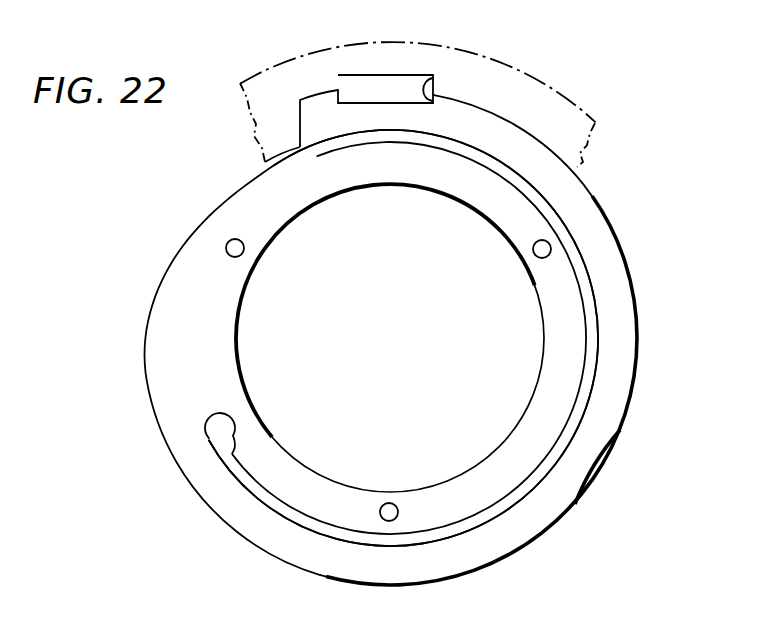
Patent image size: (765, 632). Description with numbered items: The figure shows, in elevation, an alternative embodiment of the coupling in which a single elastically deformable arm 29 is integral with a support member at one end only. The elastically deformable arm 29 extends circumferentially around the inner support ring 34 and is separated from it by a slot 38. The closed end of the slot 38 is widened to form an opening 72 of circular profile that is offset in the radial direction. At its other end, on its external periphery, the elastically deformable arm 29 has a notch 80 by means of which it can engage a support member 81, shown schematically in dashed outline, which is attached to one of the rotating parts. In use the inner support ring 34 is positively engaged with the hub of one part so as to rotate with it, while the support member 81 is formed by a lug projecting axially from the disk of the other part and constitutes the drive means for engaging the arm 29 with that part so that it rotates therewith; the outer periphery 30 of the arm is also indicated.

The elastically deformable arm 29 is at (625, 372).
The outer periphery of flange 30 is at (604, 470).
The inner support ring 34 is at (573, 313).
The slot 38 is at (265, 495).
The opening 72 is at (231, 418).
The notch 80 is at (428, 73).
The support member 81 is at (372, 73).